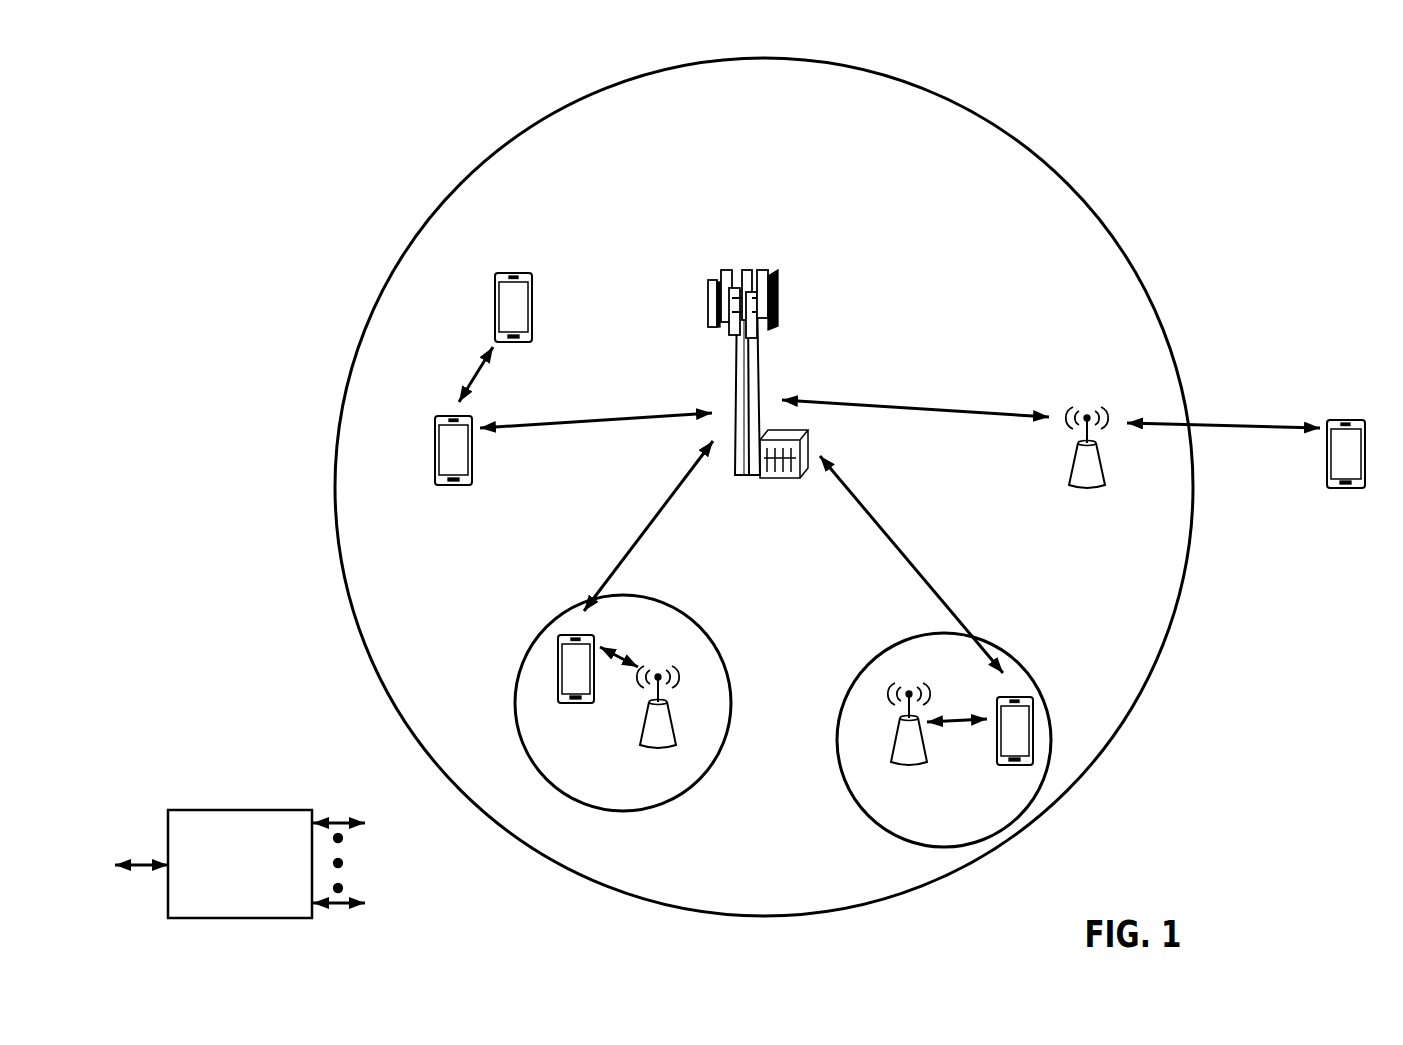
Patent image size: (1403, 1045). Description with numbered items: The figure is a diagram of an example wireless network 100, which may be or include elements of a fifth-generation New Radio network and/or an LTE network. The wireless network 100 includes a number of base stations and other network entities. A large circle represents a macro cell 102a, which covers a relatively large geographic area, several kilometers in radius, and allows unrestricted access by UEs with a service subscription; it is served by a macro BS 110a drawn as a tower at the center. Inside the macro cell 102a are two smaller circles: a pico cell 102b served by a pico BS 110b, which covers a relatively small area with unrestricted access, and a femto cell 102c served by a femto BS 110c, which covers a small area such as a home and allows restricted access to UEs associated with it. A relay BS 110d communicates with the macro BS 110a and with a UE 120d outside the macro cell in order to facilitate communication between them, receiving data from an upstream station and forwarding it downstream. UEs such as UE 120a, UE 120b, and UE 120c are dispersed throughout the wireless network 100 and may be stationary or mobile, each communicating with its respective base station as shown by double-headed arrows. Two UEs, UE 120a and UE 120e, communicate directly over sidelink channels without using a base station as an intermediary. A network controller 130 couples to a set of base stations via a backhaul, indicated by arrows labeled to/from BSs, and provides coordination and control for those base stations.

The wireless network 100 is at (226, 55).
The macro cell 102a is at (1050, 165).
The pico cell 102b is at (700, 629).
The femto cell 102c is at (882, 650).
The macro BS 110a is at (754, 262).
The pico BS 110b is at (678, 736).
The femto BS 110c is at (892, 752).
The relay BS 110d is at (1088, 408).
The UE 120a is at (435, 447).
The UE 120b is at (562, 705).
The UE 120c is at (999, 766).
The UE 120d is at (1359, 420).
The UE 120e is at (496, 297).
The network controller 130 is at (240, 810).